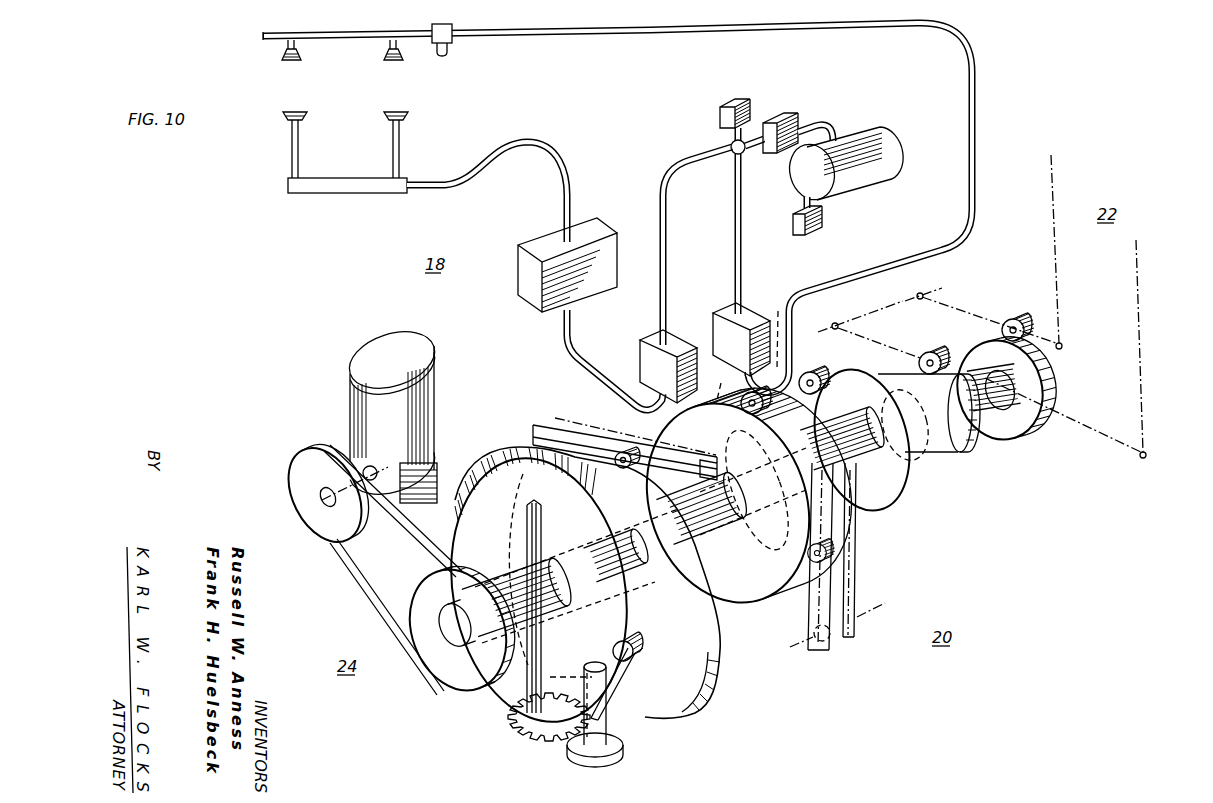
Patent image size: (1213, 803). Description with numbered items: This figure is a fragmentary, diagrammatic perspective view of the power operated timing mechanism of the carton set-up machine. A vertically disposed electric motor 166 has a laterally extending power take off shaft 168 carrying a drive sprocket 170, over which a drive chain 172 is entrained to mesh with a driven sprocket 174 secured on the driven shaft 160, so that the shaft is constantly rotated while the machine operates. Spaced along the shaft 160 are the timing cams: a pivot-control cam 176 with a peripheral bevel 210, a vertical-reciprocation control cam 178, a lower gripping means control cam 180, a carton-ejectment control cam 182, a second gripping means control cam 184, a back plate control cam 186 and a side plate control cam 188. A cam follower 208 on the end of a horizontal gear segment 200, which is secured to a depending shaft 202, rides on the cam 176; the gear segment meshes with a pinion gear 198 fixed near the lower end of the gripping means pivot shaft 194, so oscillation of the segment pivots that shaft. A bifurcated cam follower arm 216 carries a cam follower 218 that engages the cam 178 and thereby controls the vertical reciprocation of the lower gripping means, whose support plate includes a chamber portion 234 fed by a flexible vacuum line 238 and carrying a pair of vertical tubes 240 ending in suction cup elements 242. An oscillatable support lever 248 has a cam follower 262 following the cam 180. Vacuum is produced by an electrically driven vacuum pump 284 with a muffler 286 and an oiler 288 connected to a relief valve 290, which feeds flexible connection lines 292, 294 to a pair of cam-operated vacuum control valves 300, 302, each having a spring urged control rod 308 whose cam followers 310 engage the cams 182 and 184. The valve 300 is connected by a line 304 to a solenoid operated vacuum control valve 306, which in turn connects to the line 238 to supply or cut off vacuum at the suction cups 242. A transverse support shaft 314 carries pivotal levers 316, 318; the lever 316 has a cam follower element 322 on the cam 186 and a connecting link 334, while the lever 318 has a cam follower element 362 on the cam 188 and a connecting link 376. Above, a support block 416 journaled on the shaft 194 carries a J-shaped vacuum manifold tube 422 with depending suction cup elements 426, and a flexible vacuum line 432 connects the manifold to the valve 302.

The driven shaft 160 is at (447, 641).
The motor 166 is at (437, 391).
The power take off shaft 168 is at (322, 506).
The drive sprocket 170 is at (292, 473).
The drive chain 172 is at (362, 592).
The driven sprocket 174 is at (459, 680).
The pivot-control cam 176 is at (625, 613).
The vertical-reciprocation control cam 178 is at (727, 675).
The lower gripping means control cam 180 is at (767, 604).
The carton-ejectment control cam 182 is at (862, 508).
The second gripping means control cam 184 is at (927, 488).
The back plate control cam 186 is at (972, 452).
The side plate control cam 188 is at (1028, 425).
The gripping means pivot shaft 194 is at (447, 54).
The pinion gear 198 is at (538, 736).
The gear segment 200 is at (626, 686).
The depending shaft 202 is at (612, 730).
The cam follower 208 is at (645, 652).
The peripheral bevel 210 is at (474, 470).
The cam follower arm 216 is at (576, 424).
The cam follower 218 is at (621, 451).
The chamber portion 234 is at (345, 182).
The flexible vacuum line 238 is at (513, 141).
The tubes 240 is at (393, 142).
The suction cup elements 242 is at (386, 116).
The oscillatable support lever 248 is at (858, 607).
The cam follower 262 is at (836, 553).
The vacuum pump 284 is at (850, 127).
The muffler 286 is at (823, 219).
The oiler 288 is at (790, 114).
The relief valve 290 is at (746, 99).
The flexible connection line 292 is at (668, 247).
The flexible connection line 294 is at (742, 212).
The vacuum control valve 300 is at (677, 338).
The vacuum control valve 302 is at (747, 312).
The line 304 is at (585, 358).
The solenoid operated vacuum control valve 306 is at (598, 222).
The control rod 308 is at (749, 348).
The cam followers 310 is at (818, 372).
The transverse support shaft 314 is at (870, 312).
The lever 316 is at (893, 354).
The lever 318 is at (959, 312).
The cam follower element 322 is at (938, 354).
The connecting link 334 is at (1145, 343).
The cam follower element 362 is at (1016, 319).
The connecting link 376 is at (1062, 290).
The support block 416 is at (452, 36).
The vacuum manifold tube 422 is at (355, 33).
The suction cup elements 426 is at (390, 60).
The flexible vacuum line 432 is at (645, 31).